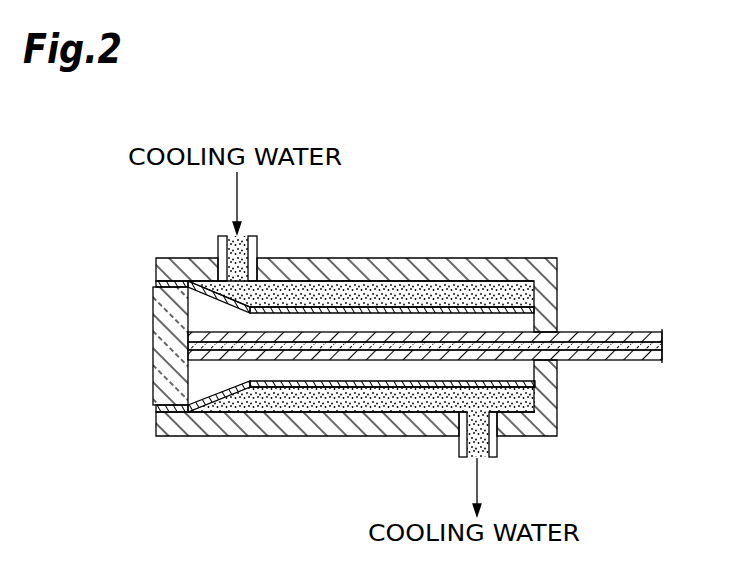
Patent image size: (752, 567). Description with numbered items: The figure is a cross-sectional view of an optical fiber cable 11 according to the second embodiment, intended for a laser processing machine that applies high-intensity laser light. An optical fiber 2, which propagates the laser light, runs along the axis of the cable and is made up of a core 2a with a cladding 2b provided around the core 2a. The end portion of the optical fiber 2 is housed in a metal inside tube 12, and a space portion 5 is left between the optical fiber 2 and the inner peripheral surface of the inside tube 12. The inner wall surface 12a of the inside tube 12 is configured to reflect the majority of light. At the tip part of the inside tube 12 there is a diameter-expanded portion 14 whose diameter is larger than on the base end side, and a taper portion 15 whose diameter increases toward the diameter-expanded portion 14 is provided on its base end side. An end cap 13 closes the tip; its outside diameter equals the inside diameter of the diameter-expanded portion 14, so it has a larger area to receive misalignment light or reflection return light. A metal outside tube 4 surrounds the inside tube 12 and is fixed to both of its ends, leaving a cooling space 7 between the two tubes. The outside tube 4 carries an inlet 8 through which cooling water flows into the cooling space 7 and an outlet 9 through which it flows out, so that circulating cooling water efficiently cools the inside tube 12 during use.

The optical fiber 2 is at (635, 322).
The core 2a is at (662, 346).
The cladding 2b is at (661, 359).
The outside tube 4 is at (240, 428).
The space portion 5 is at (392, 330).
The cooling space 7 is at (478, 283).
The inlet 8 is at (246, 238).
The outlet 9 is at (480, 460).
The optical fiber cable 11 is at (548, 203).
The inside tube 12 is at (307, 383).
The inner wall surface 12a is at (370, 375).
The end cap 13 is at (160, 345).
The diameter-expanded portion 14 is at (176, 410).
The taper portion 15 is at (220, 402).